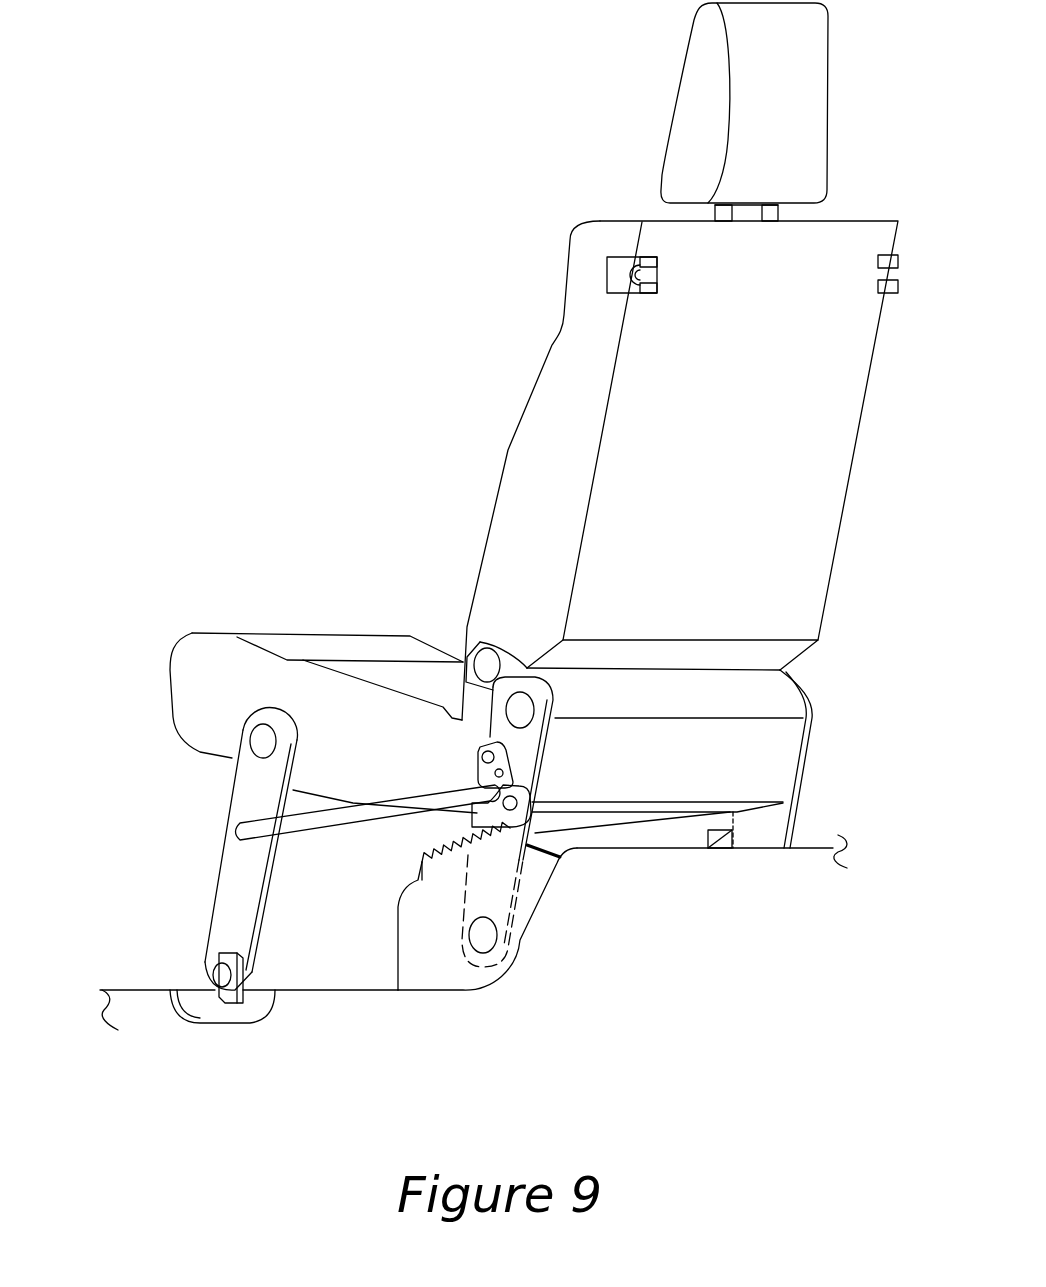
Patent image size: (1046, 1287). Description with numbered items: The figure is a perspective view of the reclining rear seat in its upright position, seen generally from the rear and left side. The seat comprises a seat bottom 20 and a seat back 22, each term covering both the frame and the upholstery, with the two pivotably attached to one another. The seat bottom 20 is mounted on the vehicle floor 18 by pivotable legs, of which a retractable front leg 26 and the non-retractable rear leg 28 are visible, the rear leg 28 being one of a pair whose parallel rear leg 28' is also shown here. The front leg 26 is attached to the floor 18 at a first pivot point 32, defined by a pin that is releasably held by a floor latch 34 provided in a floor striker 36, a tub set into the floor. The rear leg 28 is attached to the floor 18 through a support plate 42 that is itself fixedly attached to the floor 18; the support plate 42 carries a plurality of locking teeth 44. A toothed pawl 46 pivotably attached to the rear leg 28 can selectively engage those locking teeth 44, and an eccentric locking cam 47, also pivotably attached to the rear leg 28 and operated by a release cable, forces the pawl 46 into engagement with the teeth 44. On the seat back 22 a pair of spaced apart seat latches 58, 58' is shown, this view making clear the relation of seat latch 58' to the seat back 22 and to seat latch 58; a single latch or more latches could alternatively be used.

The vehicle floor 18 is at (123, 1010).
The seat bottom 20 is at (283, 632).
The seat back 22 is at (570, 368).
The front leg 26 is at (253, 786).
The rear leg 28 is at (557, 824).
The rear leg 28' is at (833, 759).
The first pivot point 32 is at (223, 978).
The floor latch 34 is at (228, 988).
The floor striker 36 is at (202, 1005).
The support plate 42 is at (448, 968).
The locking teeth 44 is at (420, 862).
The toothed pawl 46 is at (480, 818).
The locking cam 47 is at (520, 770).
The seat latch 58 is at (579, 215).
The seat latch 58' is at (905, 223).